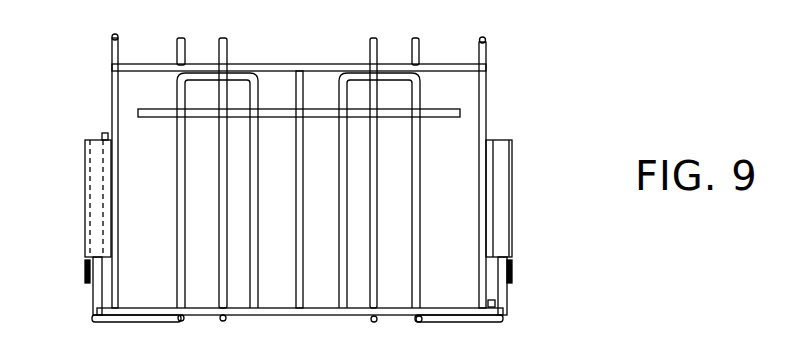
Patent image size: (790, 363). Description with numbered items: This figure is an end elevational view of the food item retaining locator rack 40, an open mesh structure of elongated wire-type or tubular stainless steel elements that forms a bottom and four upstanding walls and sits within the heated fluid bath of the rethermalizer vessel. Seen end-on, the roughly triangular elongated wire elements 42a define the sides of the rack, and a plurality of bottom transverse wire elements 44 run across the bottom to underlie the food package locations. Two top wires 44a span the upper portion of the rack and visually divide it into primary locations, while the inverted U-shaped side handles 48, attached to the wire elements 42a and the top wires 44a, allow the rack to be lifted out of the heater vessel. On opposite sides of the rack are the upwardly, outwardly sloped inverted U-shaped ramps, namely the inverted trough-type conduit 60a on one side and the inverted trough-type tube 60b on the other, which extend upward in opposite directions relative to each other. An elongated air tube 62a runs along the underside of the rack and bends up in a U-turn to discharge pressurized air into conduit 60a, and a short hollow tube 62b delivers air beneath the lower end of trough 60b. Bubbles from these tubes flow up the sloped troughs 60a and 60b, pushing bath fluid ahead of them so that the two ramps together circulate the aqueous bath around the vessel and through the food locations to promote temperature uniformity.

The locator rack 40 is at (533, 70).
The triangular elongated wire elements 42a is at (105, 135).
The bottom transverse wire elements 44 is at (280, 310).
The top wires 44a is at (290, 64).
The side handles 48 is at (487, 53).
The inverted trough-type conduit 60a is at (505, 218).
The inverted trough-type tube 60b is at (83, 172).
The elongated air tube 62a is at (447, 318).
The short hollow tube 62b is at (138, 313).